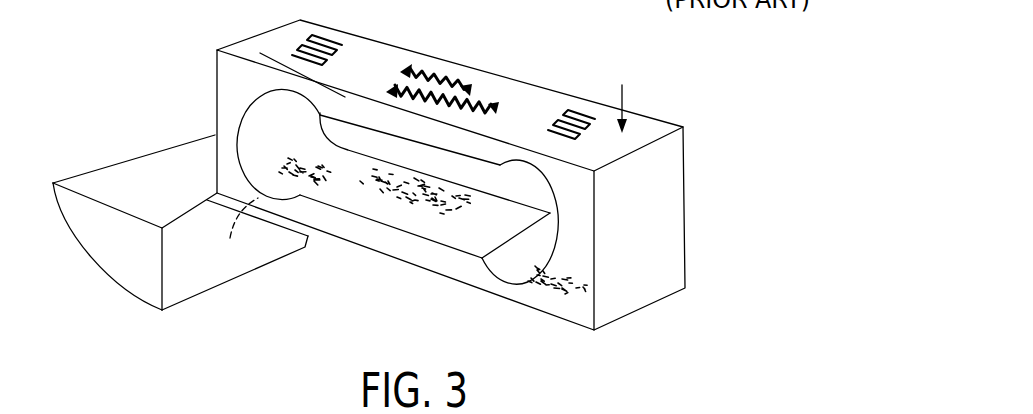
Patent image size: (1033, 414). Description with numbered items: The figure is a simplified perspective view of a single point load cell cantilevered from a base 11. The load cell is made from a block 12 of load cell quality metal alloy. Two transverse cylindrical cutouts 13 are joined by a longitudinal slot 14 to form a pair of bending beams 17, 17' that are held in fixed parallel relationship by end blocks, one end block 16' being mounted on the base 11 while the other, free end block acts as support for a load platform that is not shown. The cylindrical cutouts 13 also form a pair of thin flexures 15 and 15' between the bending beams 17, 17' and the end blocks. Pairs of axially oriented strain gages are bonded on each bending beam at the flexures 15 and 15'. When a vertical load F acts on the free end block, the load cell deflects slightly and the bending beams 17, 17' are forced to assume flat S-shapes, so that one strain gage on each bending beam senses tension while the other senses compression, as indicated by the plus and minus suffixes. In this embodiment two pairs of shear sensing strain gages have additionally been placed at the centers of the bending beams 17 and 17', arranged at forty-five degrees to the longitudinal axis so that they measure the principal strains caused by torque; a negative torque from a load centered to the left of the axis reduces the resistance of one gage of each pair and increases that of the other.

The base 11 is at (139, 178).
The block 12 is at (673, 202).
The transverse cylindrical cutouts 13 is at (247, 118).
The longitudinal slot 14 is at (353, 202).
The thin flexure 15 is at (380, 76).
The thin flexure 15' is at (398, 282).
The end block 16' is at (201, 119).
The bending beam 17 is at (410, 106).
The bending beam 17' is at (391, 251).
The vertical load F is at (623, 93).